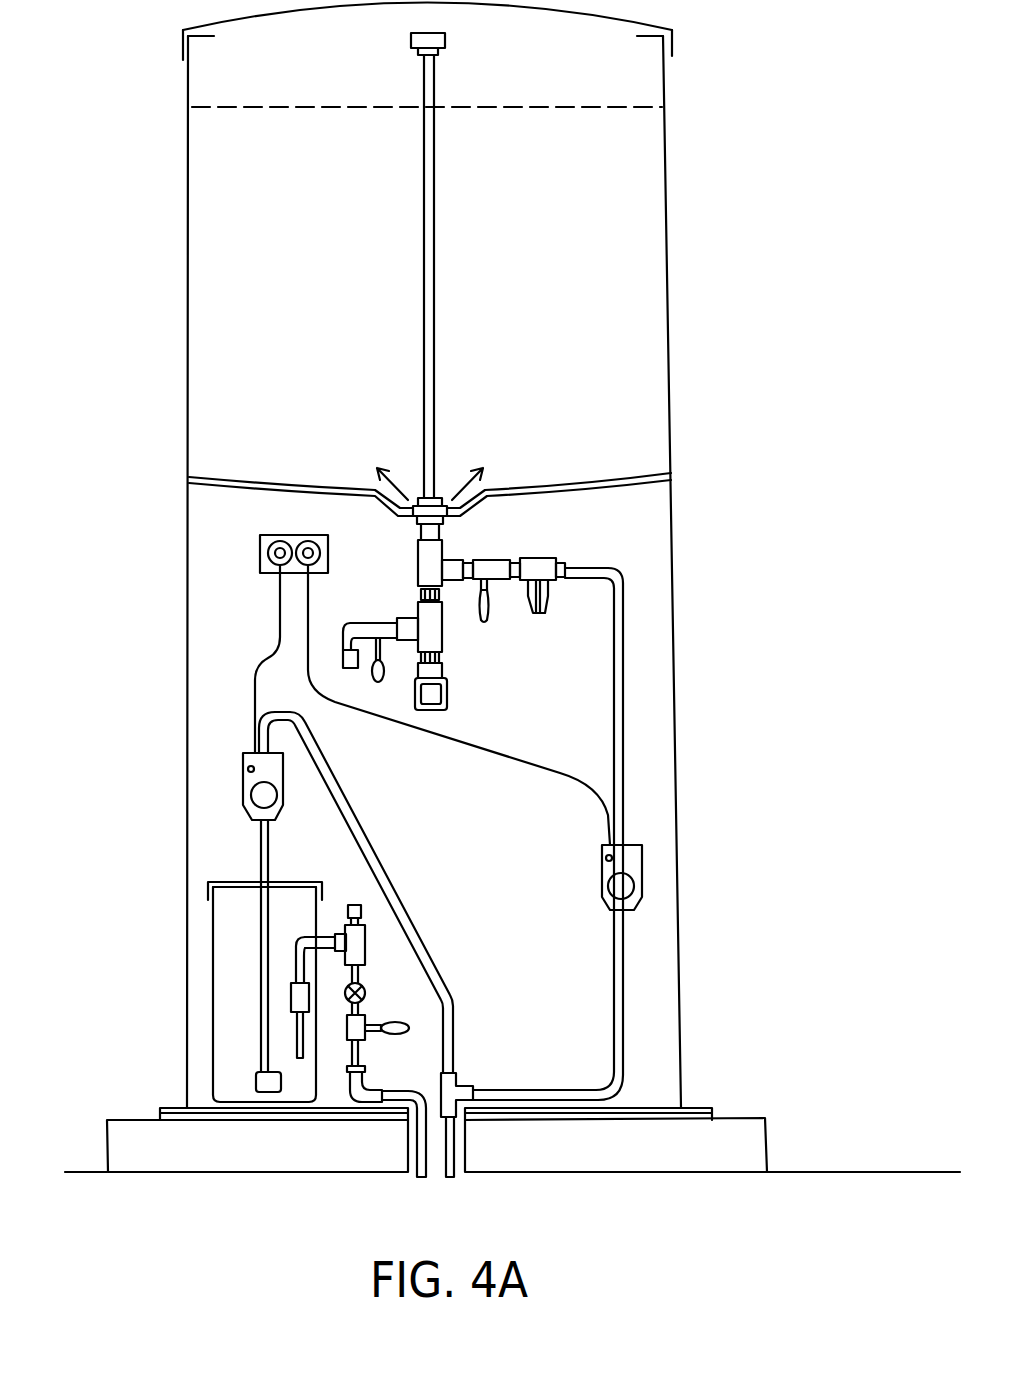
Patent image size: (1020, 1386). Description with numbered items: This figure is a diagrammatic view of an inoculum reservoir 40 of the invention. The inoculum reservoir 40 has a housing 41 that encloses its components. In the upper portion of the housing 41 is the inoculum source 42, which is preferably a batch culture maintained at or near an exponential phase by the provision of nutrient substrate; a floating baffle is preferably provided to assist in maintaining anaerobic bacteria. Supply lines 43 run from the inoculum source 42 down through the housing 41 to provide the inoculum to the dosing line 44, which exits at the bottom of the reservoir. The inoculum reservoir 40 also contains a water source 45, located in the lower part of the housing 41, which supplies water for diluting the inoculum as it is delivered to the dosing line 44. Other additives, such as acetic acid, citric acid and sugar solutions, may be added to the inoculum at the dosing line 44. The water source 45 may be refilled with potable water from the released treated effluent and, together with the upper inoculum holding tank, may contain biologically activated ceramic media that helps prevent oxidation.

The inoculum reservoir 40 is at (690, 300).
The housing 41 is at (673, 612).
The inoculum source 42 is at (530, 280).
The supply lines 43 is at (624, 715).
The dosing line 44 is at (437, 1160).
The water source 45 is at (232, 963).